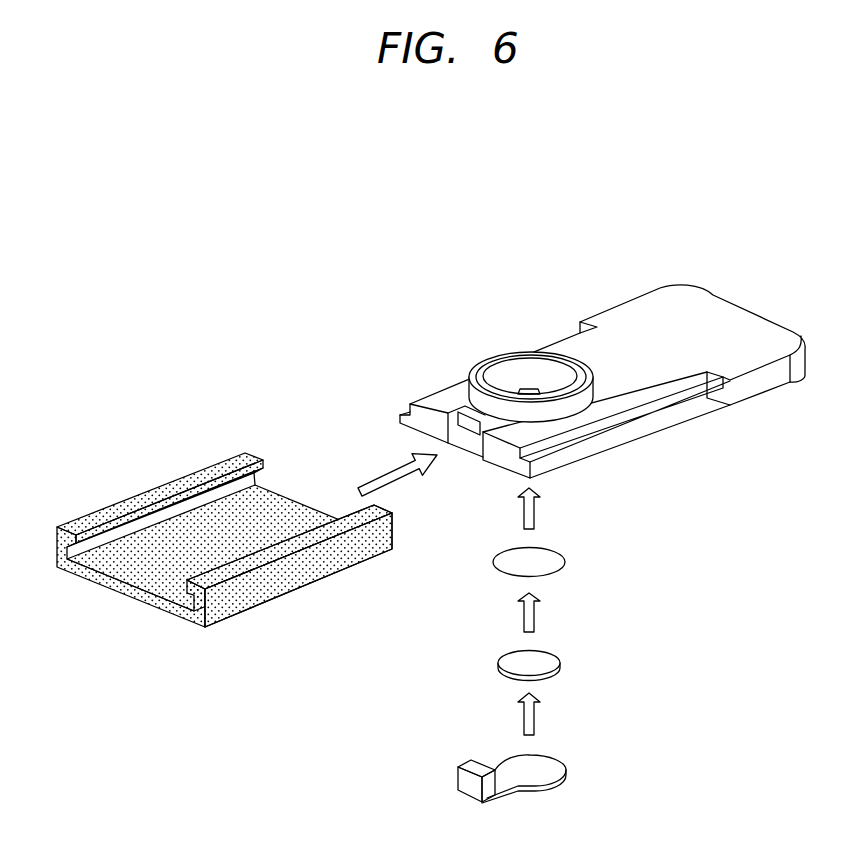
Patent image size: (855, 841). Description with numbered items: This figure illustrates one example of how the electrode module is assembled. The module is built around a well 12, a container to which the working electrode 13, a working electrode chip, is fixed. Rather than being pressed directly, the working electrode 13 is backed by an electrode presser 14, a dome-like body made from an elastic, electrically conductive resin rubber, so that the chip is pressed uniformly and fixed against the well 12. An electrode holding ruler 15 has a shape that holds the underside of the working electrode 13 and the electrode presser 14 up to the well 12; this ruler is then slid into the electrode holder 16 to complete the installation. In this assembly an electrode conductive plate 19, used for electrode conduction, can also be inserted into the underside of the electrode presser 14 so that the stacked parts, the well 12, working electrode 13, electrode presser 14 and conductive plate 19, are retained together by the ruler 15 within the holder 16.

The well 12 is at (533, 363).
The working electrode 13 is at (528, 562).
The electrode presser 14 is at (529, 663).
The electrode holding ruler 15 is at (188, 533).
The electrode holder 16 is at (688, 325).
The electrode conductive plate 19 is at (529, 770).